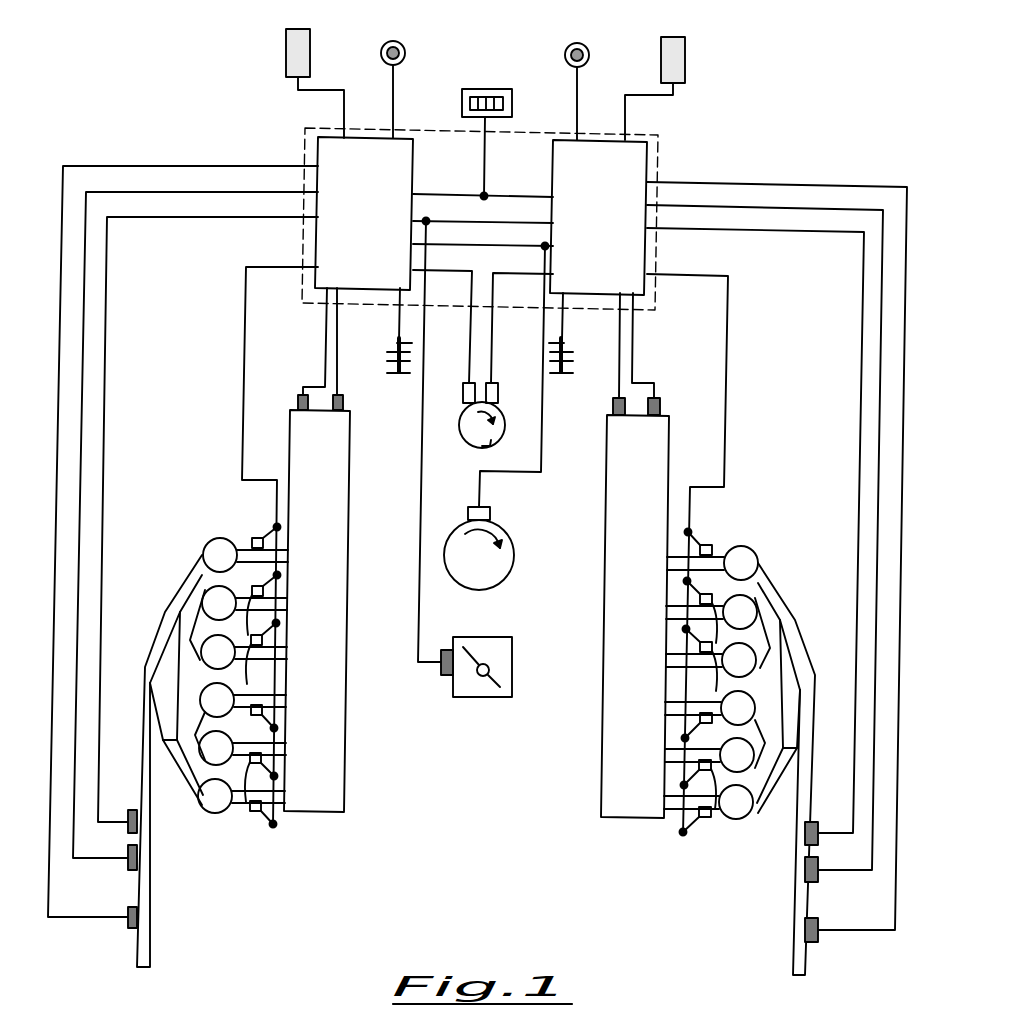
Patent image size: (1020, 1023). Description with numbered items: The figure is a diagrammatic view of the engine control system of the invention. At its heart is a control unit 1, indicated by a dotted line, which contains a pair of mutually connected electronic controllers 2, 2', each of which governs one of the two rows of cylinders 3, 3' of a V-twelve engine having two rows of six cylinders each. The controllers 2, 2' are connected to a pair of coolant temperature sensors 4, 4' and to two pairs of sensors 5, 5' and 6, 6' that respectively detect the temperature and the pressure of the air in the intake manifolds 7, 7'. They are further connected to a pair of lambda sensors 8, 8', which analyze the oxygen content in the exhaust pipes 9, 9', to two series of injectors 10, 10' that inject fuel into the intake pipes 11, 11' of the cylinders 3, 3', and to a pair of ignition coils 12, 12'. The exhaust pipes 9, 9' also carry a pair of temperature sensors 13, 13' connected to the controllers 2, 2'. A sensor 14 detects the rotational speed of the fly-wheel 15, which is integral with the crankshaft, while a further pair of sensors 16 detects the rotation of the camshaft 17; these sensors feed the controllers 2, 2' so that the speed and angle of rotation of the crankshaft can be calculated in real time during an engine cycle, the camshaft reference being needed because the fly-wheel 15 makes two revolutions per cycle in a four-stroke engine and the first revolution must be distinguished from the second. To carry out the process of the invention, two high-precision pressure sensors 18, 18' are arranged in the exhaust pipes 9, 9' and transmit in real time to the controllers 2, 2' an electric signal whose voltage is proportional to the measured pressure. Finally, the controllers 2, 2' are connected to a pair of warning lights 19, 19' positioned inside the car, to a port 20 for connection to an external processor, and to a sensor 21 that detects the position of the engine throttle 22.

The control unit 1 is at (310, 135).
The electronic controller 2 is at (325, 203).
The electronic controller 2' is at (644, 207).
The cylinders 3 is at (197, 683).
The cylinders 3' is at (763, 698).
The coolant temperature sensor 4 is at (385, 330).
The coolant temperature sensor 4' is at (579, 333).
The air temperature sensor 5 is at (282, 378).
The air temperature sensor 5' is at (680, 381).
The air pressure sensor 6 is at (362, 420).
The air pressure sensor 6' is at (590, 422).
The intake manifold 7 is at (314, 643).
The intake manifold 7' is at (635, 648).
The lambda sensor 8 is at (121, 796).
The lambda sensor 8' is at (826, 807).
The exhaust pipe 9 is at (156, 761).
The exhaust pipe 9' is at (803, 769).
The injectors 10 is at (243, 679).
The injectors 10' is at (722, 683).
The intake pipes 11 is at (311, 676).
The intake pipes 11' is at (635, 683).
The ignition coil 12 is at (274, 72).
The ignition coil 12' is at (702, 73).
The temperature sensor 13 is at (107, 936).
The temperature sensor 13' is at (841, 949).
The sensor 14 is at (484, 515).
The fly-wheel 15 is at (478, 580).
The sensor 16 is at (466, 384).
The camshaft 17 is at (478, 438).
The high-precision pressure sensor 18 is at (110, 878).
The high-precision pressure sensor 18' is at (842, 889).
The warning light 19 is at (369, 72).
The warning light 19' is at (606, 73).
The port 20 is at (481, 100).
The sensor 21 is at (441, 665).
The engine throttle 22 is at (474, 697).